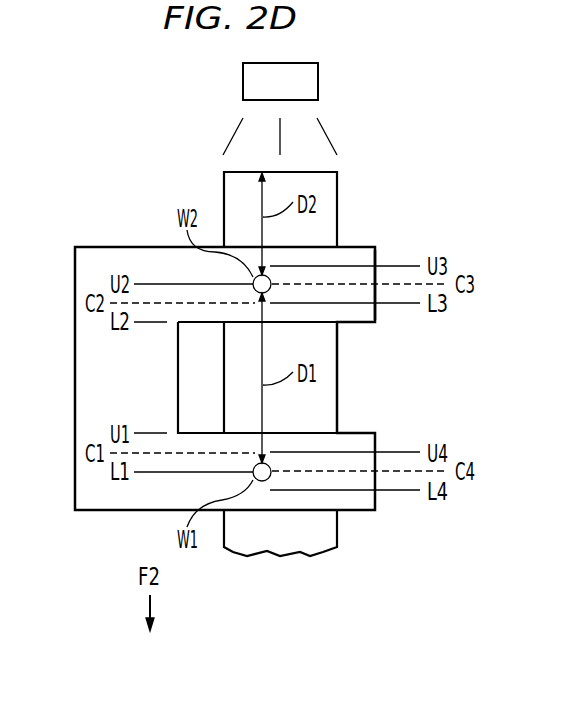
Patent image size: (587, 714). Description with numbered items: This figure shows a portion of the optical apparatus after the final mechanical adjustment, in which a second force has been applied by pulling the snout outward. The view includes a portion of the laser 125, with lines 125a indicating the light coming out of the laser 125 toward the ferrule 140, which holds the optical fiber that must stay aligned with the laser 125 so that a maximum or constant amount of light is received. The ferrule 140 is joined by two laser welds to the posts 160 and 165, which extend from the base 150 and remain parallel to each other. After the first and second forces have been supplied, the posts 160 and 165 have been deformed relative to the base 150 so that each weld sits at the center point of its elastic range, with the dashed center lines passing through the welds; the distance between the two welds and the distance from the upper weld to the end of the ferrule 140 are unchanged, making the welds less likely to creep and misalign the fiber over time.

The laser 125 is at (248, 80).
The lines showing light 125a is at (335, 135).
The ferrule 140 is at (328, 185).
The base 150 is at (87, 378).
The post 160 is at (355, 500).
The post 165 is at (358, 257).